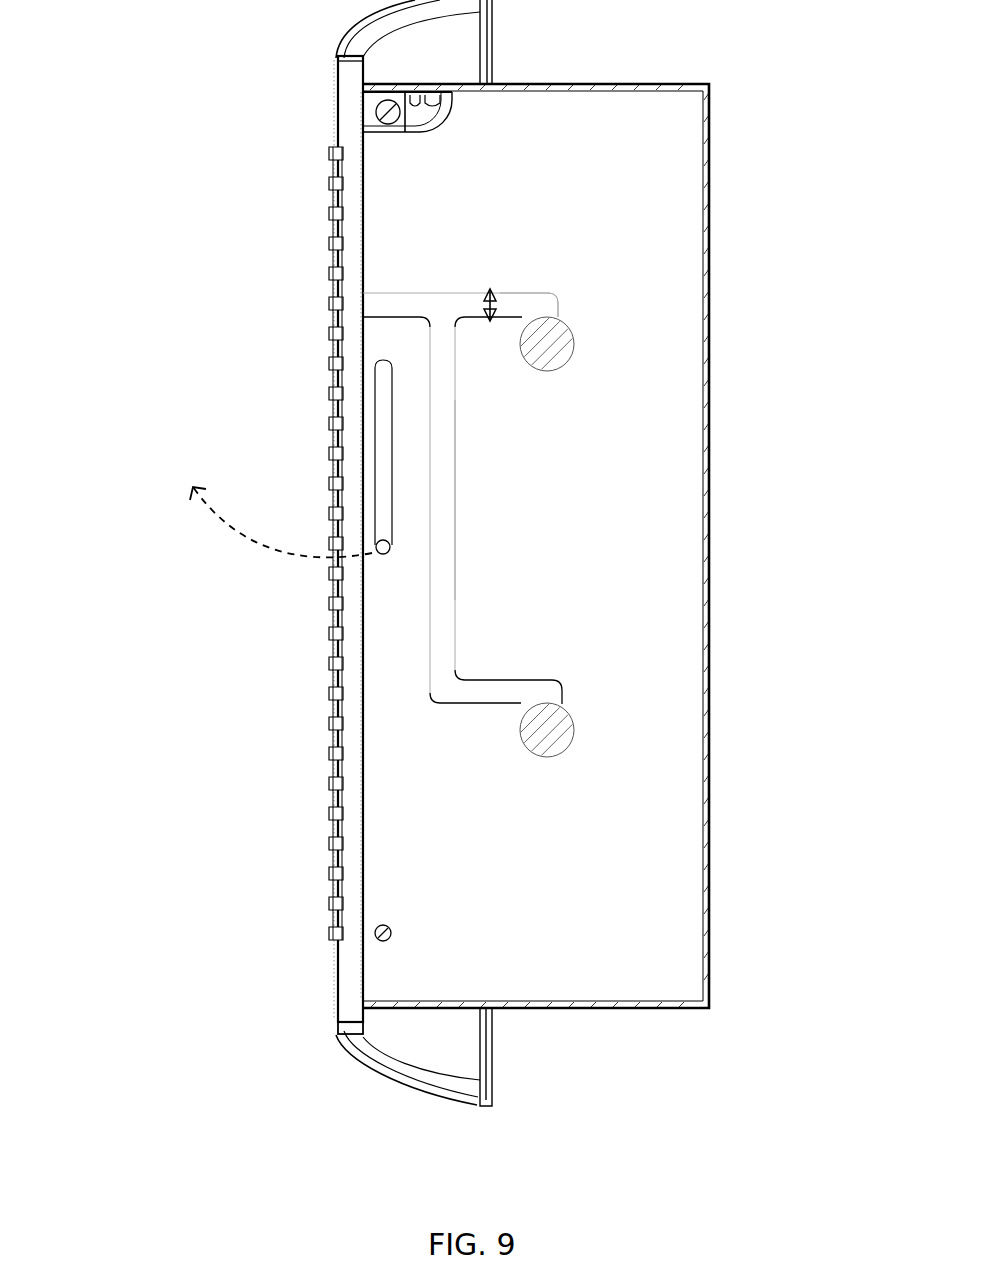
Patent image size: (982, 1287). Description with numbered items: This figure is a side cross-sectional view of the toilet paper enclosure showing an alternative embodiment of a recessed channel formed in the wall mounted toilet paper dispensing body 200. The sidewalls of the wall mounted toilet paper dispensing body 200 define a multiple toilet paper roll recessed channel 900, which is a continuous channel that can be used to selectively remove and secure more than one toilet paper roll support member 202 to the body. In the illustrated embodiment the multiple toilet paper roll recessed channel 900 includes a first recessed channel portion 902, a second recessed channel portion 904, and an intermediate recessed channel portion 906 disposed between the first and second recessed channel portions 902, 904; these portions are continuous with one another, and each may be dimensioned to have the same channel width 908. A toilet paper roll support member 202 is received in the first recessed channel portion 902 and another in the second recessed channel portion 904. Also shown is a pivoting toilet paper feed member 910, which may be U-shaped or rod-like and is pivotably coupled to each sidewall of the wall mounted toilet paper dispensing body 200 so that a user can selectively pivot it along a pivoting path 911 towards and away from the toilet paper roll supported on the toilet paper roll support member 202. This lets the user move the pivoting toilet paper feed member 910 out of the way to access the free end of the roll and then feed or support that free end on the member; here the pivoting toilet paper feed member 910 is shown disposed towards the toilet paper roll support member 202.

The wall mounted toilet paper dispensing body 200 is at (702, 1075).
The toilet paper roll support member 202 is at (560, 340).
The multiple toilet paper roll recessed channel 900 is at (412, 603).
The first recessed channel portion 902 is at (560, 302).
The second recessed channel portion 904 is at (573, 702).
The intermediate recessed channel portion 906 is at (470, 548).
The channel width 908 is at (487, 301).
The pivoting toilet paper feed member 910 is at (380, 451).
The pivoting path 911 is at (247, 537).